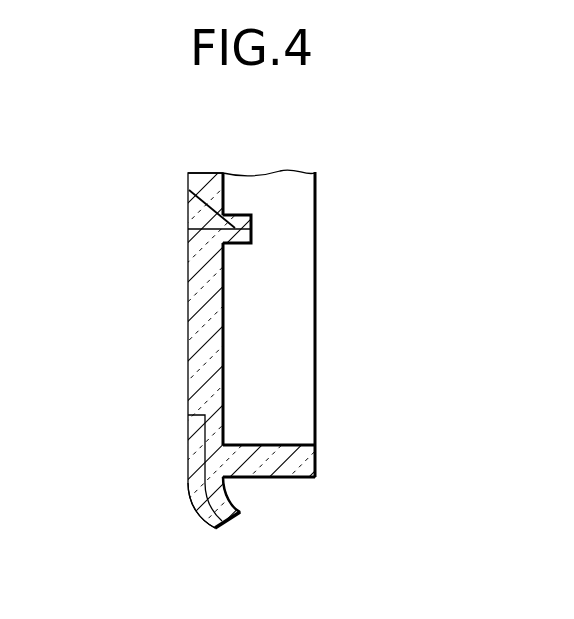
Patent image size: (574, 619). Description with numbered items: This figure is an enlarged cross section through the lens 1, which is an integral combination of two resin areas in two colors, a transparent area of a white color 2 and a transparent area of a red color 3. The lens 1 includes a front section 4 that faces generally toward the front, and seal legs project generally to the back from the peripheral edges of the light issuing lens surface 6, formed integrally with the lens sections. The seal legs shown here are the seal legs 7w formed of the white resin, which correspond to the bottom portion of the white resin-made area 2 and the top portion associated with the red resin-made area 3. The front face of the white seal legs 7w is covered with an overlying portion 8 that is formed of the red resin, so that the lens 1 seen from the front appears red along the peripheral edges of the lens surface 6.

The lens 1 is at (357, 309).
The transparent area of a white color 2 is at (188, 333).
The transparent area of a red color 3 is at (188, 196).
The front section 4 is at (188, 250).
The light issuing lens surface 6 is at (188, 400).
The seal legs formed of the white resin 7w is at (306, 459).
The overlying portion 8 is at (192, 503).